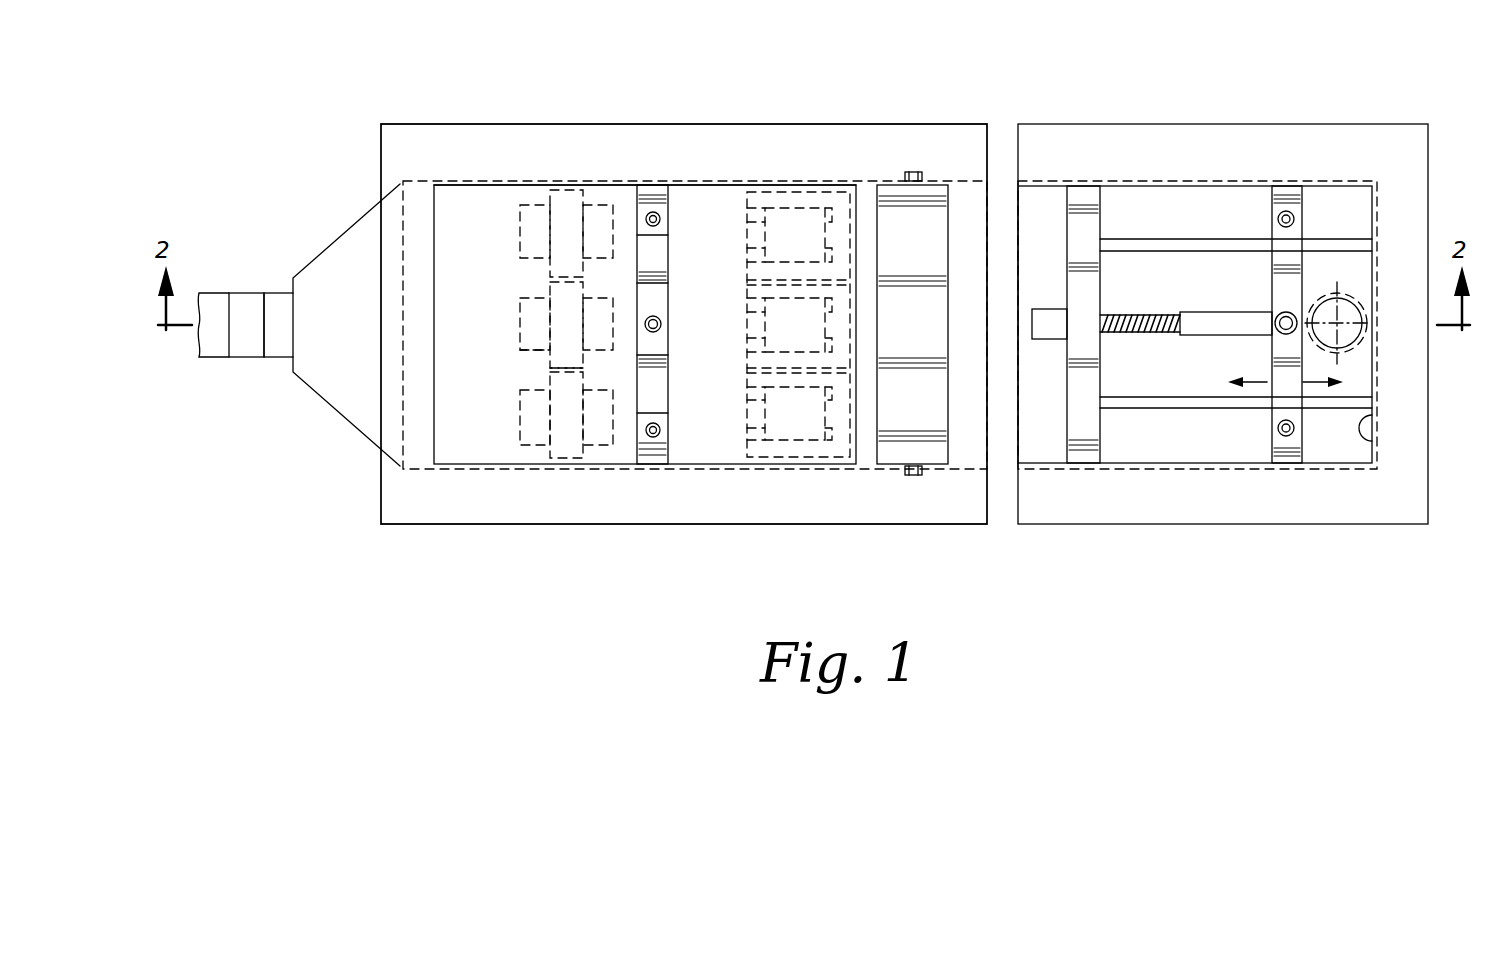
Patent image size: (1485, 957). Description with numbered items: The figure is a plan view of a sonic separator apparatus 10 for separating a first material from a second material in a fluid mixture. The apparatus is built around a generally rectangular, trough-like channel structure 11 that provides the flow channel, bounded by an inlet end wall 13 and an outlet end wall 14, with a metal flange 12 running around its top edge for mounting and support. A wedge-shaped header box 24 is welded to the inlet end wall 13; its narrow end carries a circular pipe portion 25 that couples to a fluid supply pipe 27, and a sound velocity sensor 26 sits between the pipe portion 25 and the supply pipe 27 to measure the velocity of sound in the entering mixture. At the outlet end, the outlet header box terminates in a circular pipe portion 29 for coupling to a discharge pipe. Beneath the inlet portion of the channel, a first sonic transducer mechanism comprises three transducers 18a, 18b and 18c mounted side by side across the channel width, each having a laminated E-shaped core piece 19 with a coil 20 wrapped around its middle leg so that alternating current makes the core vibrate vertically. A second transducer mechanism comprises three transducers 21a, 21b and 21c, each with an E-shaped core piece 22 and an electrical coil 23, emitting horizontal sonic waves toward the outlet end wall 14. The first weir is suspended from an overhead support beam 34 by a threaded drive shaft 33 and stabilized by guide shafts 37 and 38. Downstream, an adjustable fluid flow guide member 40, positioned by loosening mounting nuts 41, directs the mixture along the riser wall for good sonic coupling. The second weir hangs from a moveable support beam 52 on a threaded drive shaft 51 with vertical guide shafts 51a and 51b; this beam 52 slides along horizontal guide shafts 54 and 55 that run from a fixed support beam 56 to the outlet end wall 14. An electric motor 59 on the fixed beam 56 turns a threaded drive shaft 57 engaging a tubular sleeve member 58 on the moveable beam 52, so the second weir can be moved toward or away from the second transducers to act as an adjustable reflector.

The sonic separator apparatus 10 is at (782, 100).
The channel structure 11 is at (688, 203).
The flange 12 is at (428, 124).
The inlet end wall 13 is at (437, 238).
The outlet end wall 14 is at (1362, 428).
The transducer 18a is at (508, 217).
The transducer 18b is at (508, 318).
The transducer 18c is at (507, 410).
The core piece 19 is at (550, 360).
The coil 20 is at (527, 346).
The transducer 21a is at (733, 232).
The transducer 21b is at (737, 352).
The transducer 21c is at (737, 440).
The core piece 22 is at (747, 288).
The electrical coil 23 is at (777, 320).
The header box 24 is at (330, 243).
The pipe portion 25 is at (278, 357).
The sound velocity sensor 26 is at (244, 357).
The fluid supply pipe 27 is at (226, 293).
The pipe portion 29 is at (1363, 348).
The drive shaft 33 is at (648, 332).
The support beam 34 is at (645, 195).
The guide shaft 37 is at (653, 210).
The guide shaft 38 is at (658, 436).
The fluid flow guide member 40 is at (880, 195).
The mounting nuts 41 is at (913, 170).
The drive shaft 51 is at (1277, 314).
The guide shaft 51a is at (1278, 212).
The guide shaft 51b is at (1295, 432).
The support beam 52 is at (1303, 217).
The guide shaft 54 is at (1190, 238).
The guide shaft 55 is at (1117, 410).
The support beam 56 is at (1100, 217).
The drive shaft 57 is at (1160, 335).
The tubular sleeve member 58 is at (1207, 337).
The electric motor 59 is at (1035, 309).